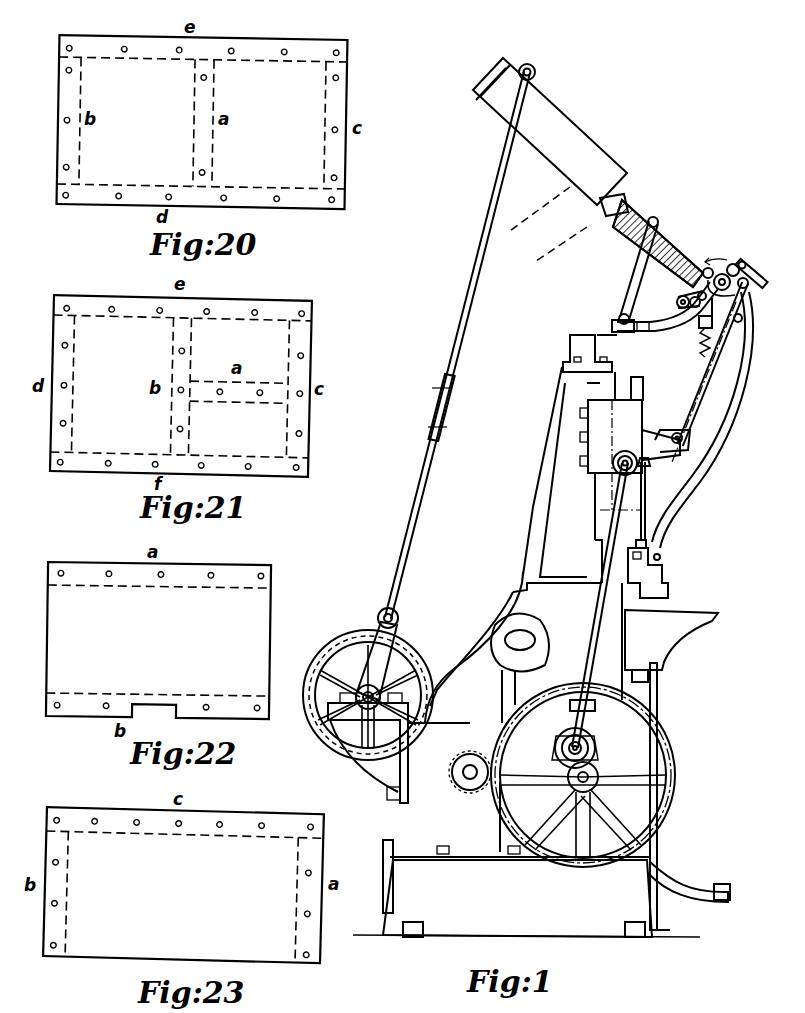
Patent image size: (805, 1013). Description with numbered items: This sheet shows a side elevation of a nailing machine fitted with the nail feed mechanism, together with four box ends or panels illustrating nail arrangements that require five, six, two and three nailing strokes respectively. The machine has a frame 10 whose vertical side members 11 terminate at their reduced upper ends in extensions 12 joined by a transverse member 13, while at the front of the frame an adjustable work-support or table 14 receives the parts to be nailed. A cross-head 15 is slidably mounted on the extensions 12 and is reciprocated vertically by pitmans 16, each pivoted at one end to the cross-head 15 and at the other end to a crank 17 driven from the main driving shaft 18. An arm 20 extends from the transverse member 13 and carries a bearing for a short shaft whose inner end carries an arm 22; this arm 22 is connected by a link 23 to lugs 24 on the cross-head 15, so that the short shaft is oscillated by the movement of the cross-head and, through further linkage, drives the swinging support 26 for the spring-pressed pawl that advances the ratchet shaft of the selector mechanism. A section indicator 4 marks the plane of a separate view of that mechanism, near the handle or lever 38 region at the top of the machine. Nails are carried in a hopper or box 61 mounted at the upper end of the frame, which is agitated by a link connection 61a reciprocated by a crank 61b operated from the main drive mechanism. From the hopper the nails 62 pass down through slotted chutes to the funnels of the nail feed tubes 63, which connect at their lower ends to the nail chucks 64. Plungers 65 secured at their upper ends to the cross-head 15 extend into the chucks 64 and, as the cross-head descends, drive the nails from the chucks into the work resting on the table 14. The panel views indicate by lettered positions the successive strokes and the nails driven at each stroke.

The section line 4 is at (768, 270).
The frame 10 is at (494, 599).
The vertical side members 11 is at (470, 633).
The extensions 12 is at (559, 453).
The transverse member 13 is at (578, 335).
The work-support or table 14 is at (675, 614).
The cross-head 15 is at (634, 422).
The pitmans 16 is at (594, 619).
The crank 17 is at (556, 776).
The main driving shaft 18 is at (468, 777).
The arm 20 is at (648, 327).
The arm 22 is at (730, 305).
The link 23 is at (740, 323).
The lugs 24 is at (685, 437).
The swinging support 26 is at (706, 268).
The lever 38 is at (765, 284).
The hopper or box 61 is at (578, 141).
The link connection 61a is at (420, 515).
The crank 61b is at (364, 634).
The nails 62 is at (634, 245).
The nail feed tubes 63 is at (726, 410).
The nail chucks 64 is at (655, 576).
The plungers 65 is at (648, 530).